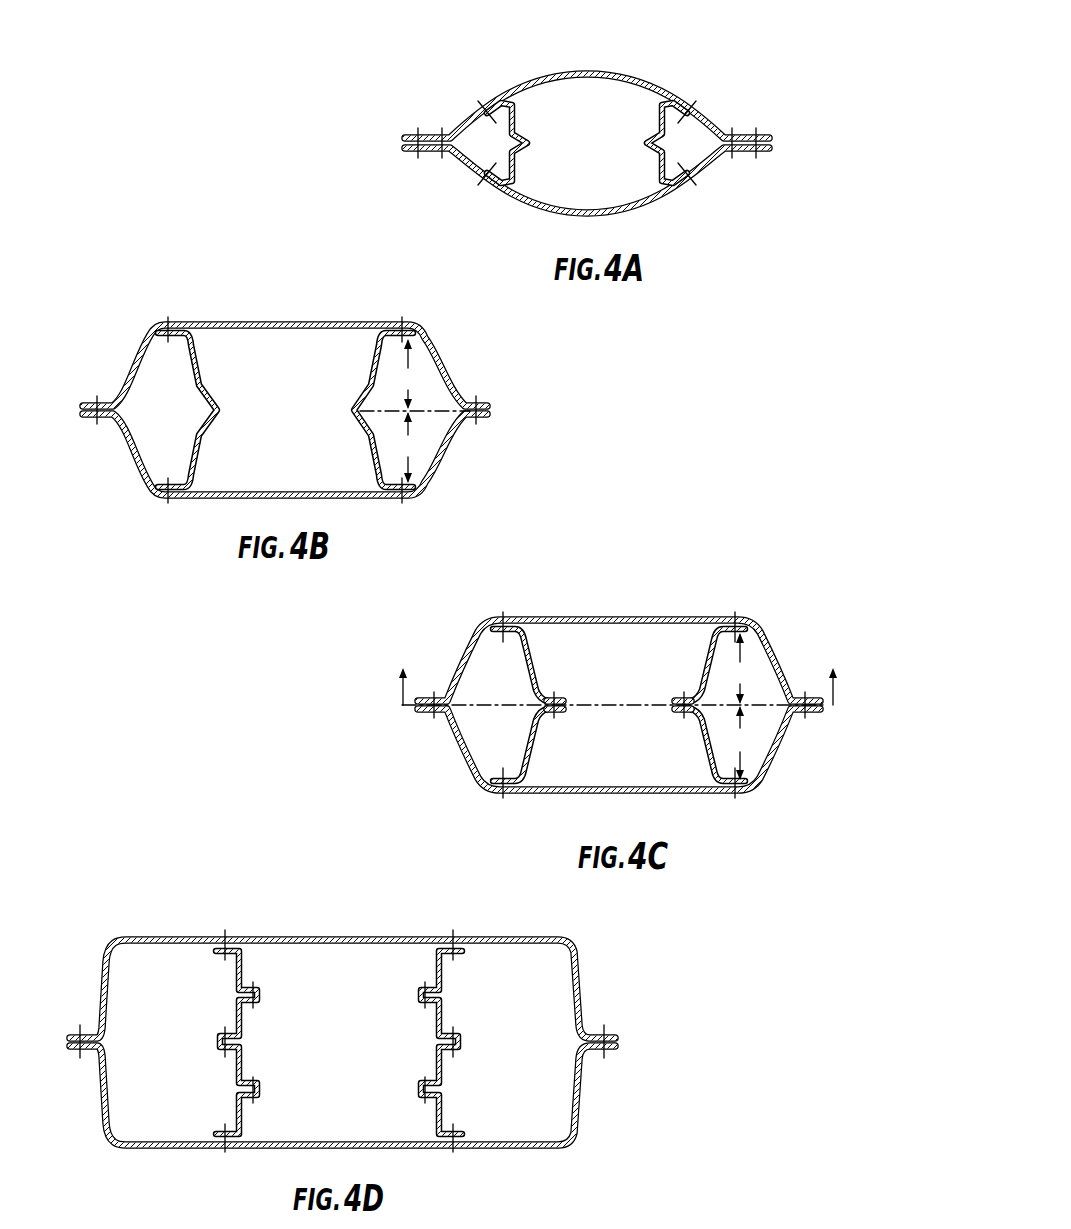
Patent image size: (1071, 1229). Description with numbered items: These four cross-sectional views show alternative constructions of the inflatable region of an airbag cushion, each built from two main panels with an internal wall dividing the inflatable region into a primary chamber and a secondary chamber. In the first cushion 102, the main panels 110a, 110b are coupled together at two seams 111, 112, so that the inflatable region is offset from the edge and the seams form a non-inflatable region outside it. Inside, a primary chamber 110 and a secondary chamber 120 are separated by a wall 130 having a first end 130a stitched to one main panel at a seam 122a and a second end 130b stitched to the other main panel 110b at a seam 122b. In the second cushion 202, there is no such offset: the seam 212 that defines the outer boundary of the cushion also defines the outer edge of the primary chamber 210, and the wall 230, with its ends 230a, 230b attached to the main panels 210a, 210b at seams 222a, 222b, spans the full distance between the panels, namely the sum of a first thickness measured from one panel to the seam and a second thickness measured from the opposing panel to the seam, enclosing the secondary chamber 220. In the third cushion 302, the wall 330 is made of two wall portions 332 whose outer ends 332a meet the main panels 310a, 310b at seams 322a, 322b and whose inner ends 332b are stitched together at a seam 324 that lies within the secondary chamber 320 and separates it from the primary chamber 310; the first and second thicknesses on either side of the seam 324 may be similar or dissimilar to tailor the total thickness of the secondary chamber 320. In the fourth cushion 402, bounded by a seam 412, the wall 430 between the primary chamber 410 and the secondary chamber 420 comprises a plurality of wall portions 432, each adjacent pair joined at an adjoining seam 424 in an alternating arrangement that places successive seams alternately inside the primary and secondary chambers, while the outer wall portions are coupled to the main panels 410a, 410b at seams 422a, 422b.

In FIG. 4A, the airbag cushion 102 is at (347, 62).
In FIG. 4A, the primary chamber 110 is at (472, 152).
In FIG. 4A, the main panel 110a is at (590, 70).
In FIG. 4A, the main panel 110b is at (632, 215).
In FIG. 4A, the seam 111 is at (416, 128).
In FIG. 4A, the seam 112 is at (442, 128).
In FIG. 4A, the secondary chamber 120 is at (561, 124).
In FIG. 4A, the seam 122a is at (487, 96).
In FIG. 4A, the seam 122b is at (483, 173).
In FIG. 4A, the wall 130 is at (652, 178).
In FIG. 4A, the first end of wall 130a is at (497, 88).
In FIG. 4A, the second end of wall 130b is at (479, 187).
In FIG. 4B, the airbag cushion 202 is at (160, 227).
In FIG. 4B, the primary chamber 210 is at (141, 424).
In FIG. 4B, the main panel 210a is at (296, 321).
In FIG. 4B, the main panel 210b is at (338, 500).
In FIG. 4B, the seam 212 is at (84, 404).
In FIG. 4B, the central chamber 220 is at (267, 392).
In FIG. 4B, the upper attachment region 222a is at (167, 325).
In FIG. 4B, the lower attachment region 222b is at (157, 500).
In FIG. 4B, the wall 230 is at (195, 463).
In FIG. 4B, the divider upper end 230a is at (194, 352).
In FIG. 4B, the divider lower end 230b is at (176, 505).
In FIG. 4C, the airbag cushion 302 is at (786, 600).
In FIG. 4C, the primary chamber 310 is at (472, 697).
In FIG. 4C, the main panel 310a is at (622, 615).
In FIG. 4C, the main panel 310b is at (630, 792).
In FIG. 4C, the secondary chamber 320 is at (639, 762).
In FIG. 4C, the upper attachment region 322a is at (500, 613).
In FIG. 4C, the lower attachment region 322b is at (498, 793).
In FIG. 4C, the seam 324 is at (564, 703).
In FIG. 4C, the wall 330 is at (518, 668).
In FIG. 4C, the wall portion 332 is at (524, 648).
In FIG. 4C, the divider wall outer end 332a is at (506, 612).
In FIG. 4C, the inner end of wall portion 332b is at (550, 690).
In FIG. 4D, the airbag cushion 402 is at (152, 886).
In FIG. 4D, the primary chamber 410 is at (151, 1044).
In FIG. 4D, the main panel 410a is at (308, 937).
In FIG. 4D, the main panel 410b is at (262, 1150).
In FIG. 4D, the end flange 412 is at (80, 1030).
In FIG. 4D, the secondary chamber 420 is at (322, 1062).
In FIG. 4D, the seam 422a is at (228, 935).
In FIG. 4D, the seam 422b is at (226, 1150).
In FIG. 4D, the adjoining seam 424 is at (258, 998).
In FIG. 4D, the wall 430 is at (423, 960).
In FIG. 4D, the wall portion 432 is at (244, 970).